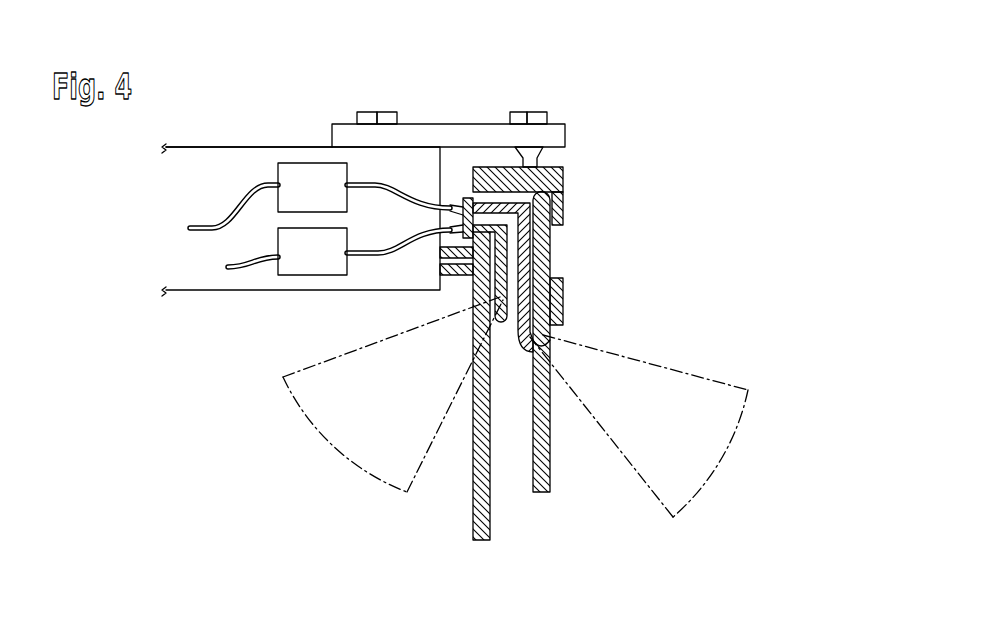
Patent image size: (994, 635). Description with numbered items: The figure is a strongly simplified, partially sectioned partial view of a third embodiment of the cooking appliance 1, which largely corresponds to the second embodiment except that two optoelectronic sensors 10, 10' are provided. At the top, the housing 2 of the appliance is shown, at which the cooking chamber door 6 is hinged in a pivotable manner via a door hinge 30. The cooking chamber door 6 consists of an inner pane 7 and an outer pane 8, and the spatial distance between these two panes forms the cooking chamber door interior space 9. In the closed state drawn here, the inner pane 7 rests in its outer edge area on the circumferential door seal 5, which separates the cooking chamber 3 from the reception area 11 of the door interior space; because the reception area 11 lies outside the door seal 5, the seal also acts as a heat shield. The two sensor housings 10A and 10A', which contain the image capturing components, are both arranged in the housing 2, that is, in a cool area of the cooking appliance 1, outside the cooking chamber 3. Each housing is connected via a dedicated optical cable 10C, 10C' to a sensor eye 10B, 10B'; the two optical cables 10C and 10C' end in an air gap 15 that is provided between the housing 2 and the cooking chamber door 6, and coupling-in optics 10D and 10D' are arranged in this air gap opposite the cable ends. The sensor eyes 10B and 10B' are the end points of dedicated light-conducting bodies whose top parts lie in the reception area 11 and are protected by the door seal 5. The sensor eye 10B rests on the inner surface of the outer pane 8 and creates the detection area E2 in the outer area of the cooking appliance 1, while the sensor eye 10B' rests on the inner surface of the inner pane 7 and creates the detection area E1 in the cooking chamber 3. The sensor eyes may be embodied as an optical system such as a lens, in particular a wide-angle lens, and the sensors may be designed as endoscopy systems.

The cooking appliance 1 is at (619, 99).
The housing 2 is at (184, 147).
The cooking chamber 3 is at (217, 483).
The door seal 5 is at (446, 276).
The cooking chamber door 6 is at (596, 316).
The inner pane 7 is at (483, 542).
The outer pane 8 is at (541, 494).
The cooking chamber door interior space 9 is at (520, 397).
The optoelectronic sensor 10 is at (274, 206).
The optoelectronic sensor 10' is at (274, 251).
The sensor housing 10A is at (297, 132).
The sensor housing 10A' is at (273, 293).
The sensor eye 10B is at (604, 378).
The sensor eye 10B' is at (446, 312).
The optical cable 10C is at (430, 133).
The optical cable 10C' is at (367, 292).
The coupling-in optics 10D is at (540, 206).
The coupling-in optics 10D' is at (398, 145).
The reception area 11 is at (533, 178).
The air gap 15 is at (443, 190).
The door hinge 30 is at (473, 124).
The detection area E1 is at (350, 465).
The detection area E2 is at (738, 428).